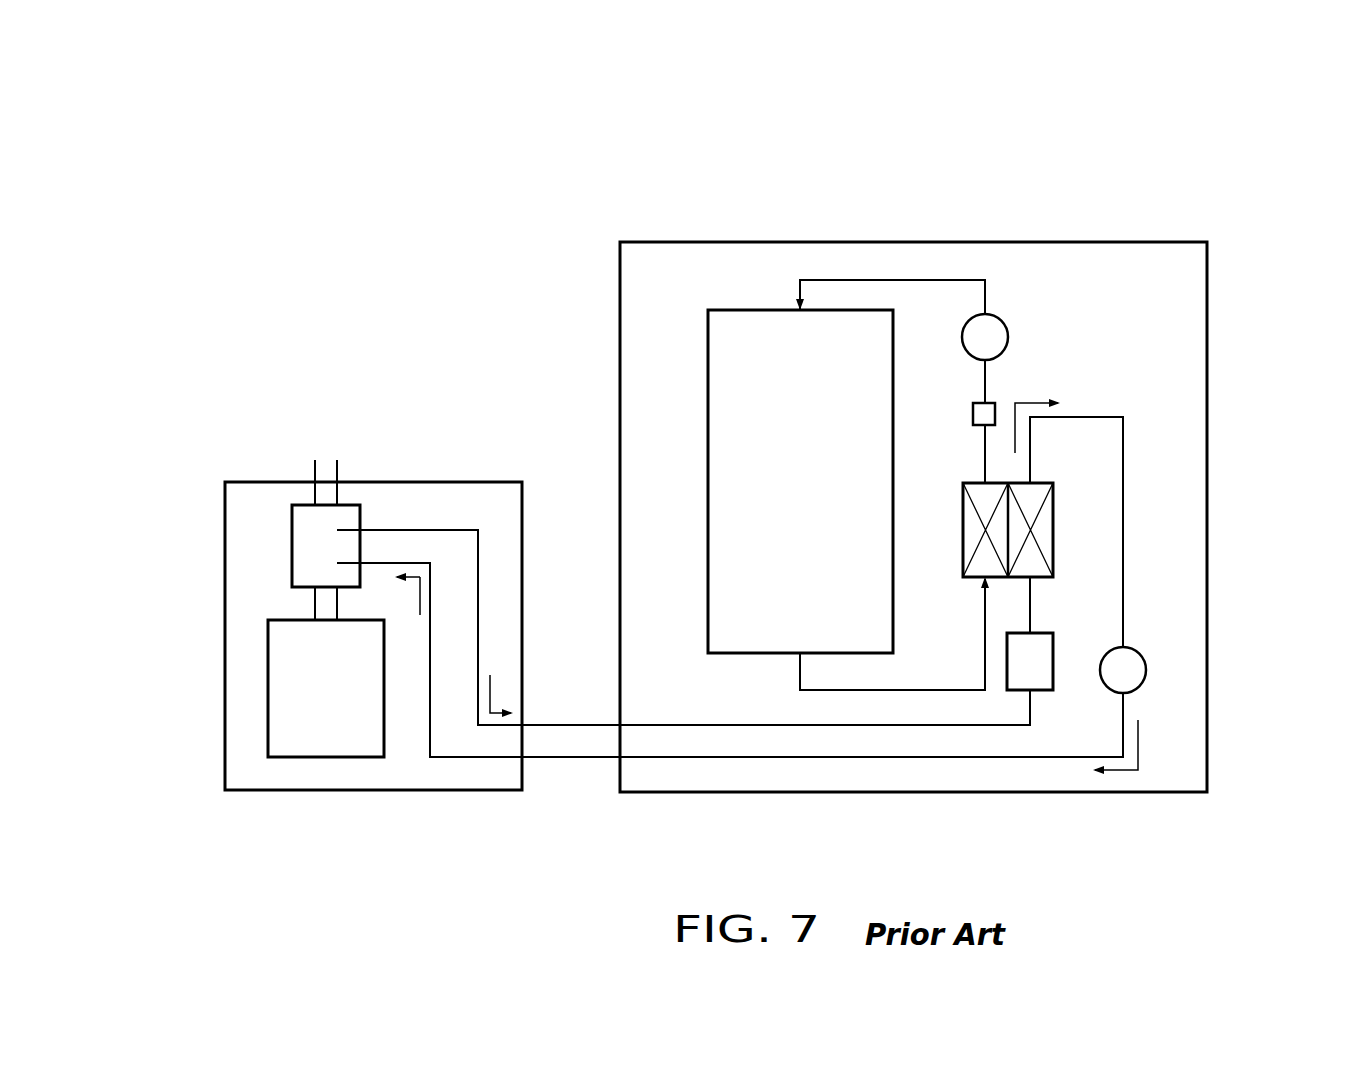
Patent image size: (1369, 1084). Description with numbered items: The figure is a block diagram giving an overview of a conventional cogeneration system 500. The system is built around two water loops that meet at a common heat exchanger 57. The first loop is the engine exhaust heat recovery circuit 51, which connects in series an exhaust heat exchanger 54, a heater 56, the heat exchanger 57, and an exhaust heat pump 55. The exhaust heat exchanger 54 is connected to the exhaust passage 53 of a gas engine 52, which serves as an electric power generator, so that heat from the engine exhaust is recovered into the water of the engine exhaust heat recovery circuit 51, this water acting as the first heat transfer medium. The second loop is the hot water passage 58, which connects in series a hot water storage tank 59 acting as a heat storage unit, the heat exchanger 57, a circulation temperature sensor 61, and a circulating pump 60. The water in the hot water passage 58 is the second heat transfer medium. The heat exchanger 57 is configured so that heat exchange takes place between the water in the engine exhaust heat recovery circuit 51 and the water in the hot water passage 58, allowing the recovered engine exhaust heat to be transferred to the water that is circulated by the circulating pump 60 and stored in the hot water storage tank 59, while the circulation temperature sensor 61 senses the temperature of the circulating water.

The cogeneration system 500 is at (224, 197).
The engine exhaust heat recovery circuit 51 is at (557, 727).
The gas engine 52 is at (302, 758).
The exhaust passage 53 is at (337, 472).
The exhaust heat exchanger 54 is at (303, 505).
The exhaust heat pump 55 is at (1135, 693).
The heater 56 is at (1018, 690).
The heat exchanger 57 is at (967, 577).
The hot water passage 58 is at (855, 280).
The hot water storage tank 59 is at (708, 363).
The circulating pump 60 is at (975, 318).
The circulation temperature sensor 61 is at (994, 403).